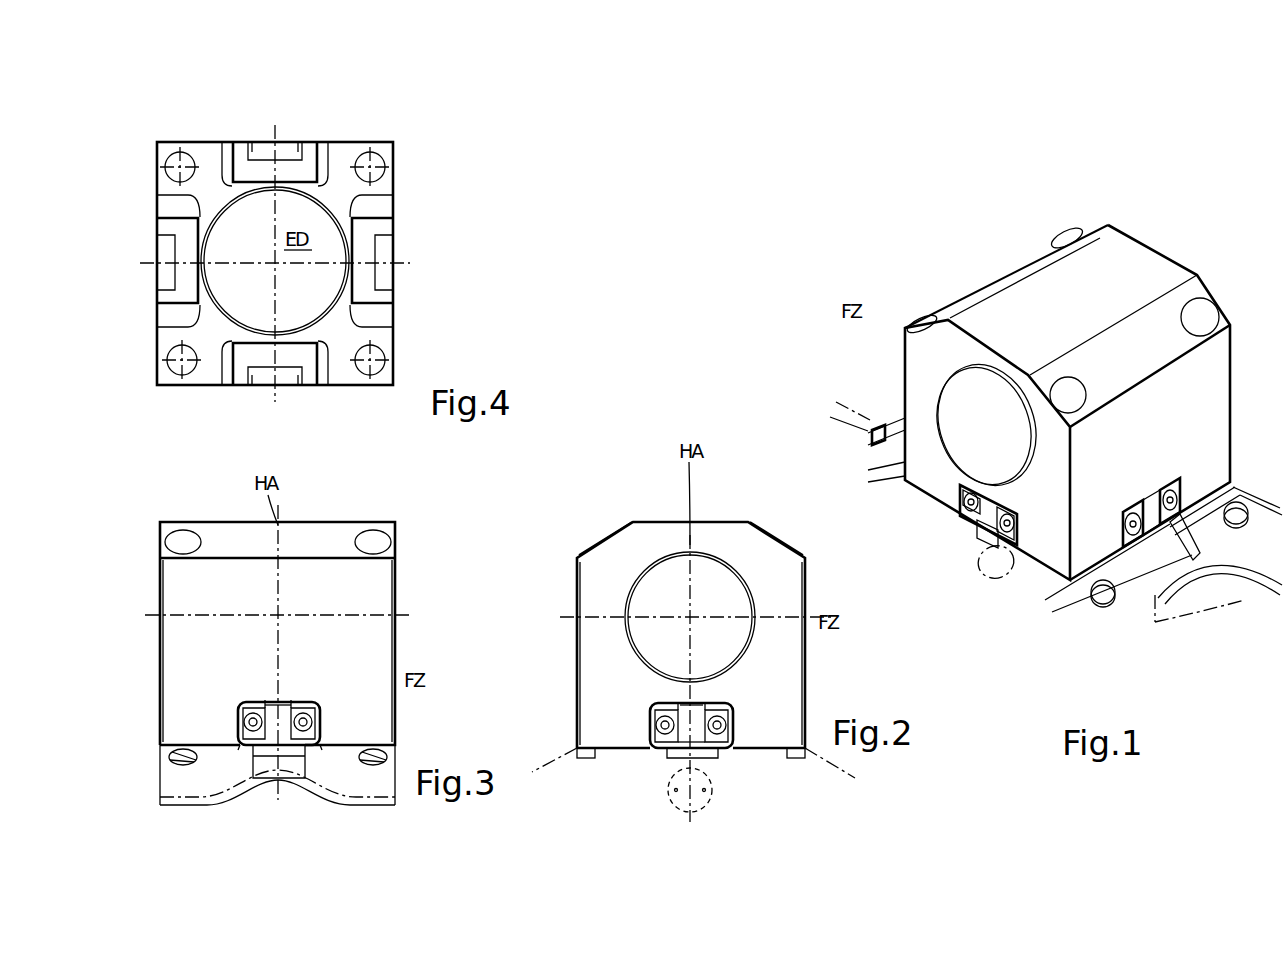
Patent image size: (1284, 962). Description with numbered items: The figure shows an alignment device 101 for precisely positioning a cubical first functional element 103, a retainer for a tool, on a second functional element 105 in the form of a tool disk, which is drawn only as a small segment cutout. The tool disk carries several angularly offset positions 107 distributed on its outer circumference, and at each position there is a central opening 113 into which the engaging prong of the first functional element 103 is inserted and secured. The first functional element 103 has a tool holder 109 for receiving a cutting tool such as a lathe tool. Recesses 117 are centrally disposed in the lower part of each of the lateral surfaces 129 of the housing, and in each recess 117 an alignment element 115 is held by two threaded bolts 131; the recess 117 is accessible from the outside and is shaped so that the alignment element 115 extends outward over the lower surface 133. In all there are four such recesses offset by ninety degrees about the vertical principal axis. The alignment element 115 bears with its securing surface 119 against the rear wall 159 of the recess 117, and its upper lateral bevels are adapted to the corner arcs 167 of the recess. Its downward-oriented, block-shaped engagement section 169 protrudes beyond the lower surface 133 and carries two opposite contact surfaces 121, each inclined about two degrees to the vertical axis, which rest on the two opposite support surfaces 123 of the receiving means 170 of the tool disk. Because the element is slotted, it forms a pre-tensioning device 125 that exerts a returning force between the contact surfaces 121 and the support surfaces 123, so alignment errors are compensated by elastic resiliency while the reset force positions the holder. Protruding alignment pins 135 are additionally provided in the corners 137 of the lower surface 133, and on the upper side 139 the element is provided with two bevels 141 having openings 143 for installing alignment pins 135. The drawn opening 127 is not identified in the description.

In FIG. 4, the alignment device 101 is at (418, 124).
In FIG. 3, the alignment device 101 is at (425, 520).
In FIG. 2, the alignment device 101 is at (772, 510).
In FIG. 1, the alignment device 101 is at (890, 275).
In FIG. 4, the first functional element 103 is at (350, 138).
In FIG. 3, the first functional element 103 is at (297, 520).
In FIG. 2, the first functional element 103 is at (713, 520).
In FIG. 1, the first functional element 103 is at (1160, 250).
In FIG. 1, the second functional element 105 is at (1087, 610).
In FIG. 1, the positions 107 is at (886, 483).
In FIG. 2, the tool holder 109 is at (728, 594).
In FIG. 1, the tool holder 109 is at (1007, 440).
In FIG. 1, the central opening 113 is at (1225, 592).
In FIG. 4, the alignment element 115 is at (262, 150).
In FIG. 3, the alignment element 115 is at (286, 712).
In FIG. 2, the alignment element 115 is at (705, 752).
In FIG. 1, the alignment element 115 is at (1180, 515).
In FIG. 4, the recess 117 is at (232, 175).
In FIG. 3, the recess 117 is at (312, 703).
In FIG. 2, the recess 117 is at (728, 712).
In FIG. 1, the recess 117 is at (1187, 503).
In FIG. 4, the securing surface 119 is at (328, 150).
In FIG. 4, the contact surface 121 is at (243, 145).
In FIG. 3, the contact surface 121 is at (245, 772).
In FIG. 2, the contact surface 121 is at (664, 754).
In FIG. 1, the contact surface 121 is at (1005, 560).
In FIG. 1, the support surface 123 is at (870, 410).
In FIG. 2, the pre-tensioning device 125 is at (683, 735).
In FIG. 2, the opening 127 is at (658, 588).
In FIG. 4, the lateral surfaces 129 is at (178, 140).
In FIG. 3, the lateral surfaces 129 is at (158, 622).
In FIG. 2, the lateral surfaces 129 is at (580, 618).
In FIG. 1, the lateral surfaces 129 is at (905, 372).
In FIG. 3, the threaded bolts 131 is at (245, 721).
In FIG. 2, the threaded bolts 131 is at (652, 722).
In FIG. 1, the threaded bolts 131 is at (965, 498).
In FIG. 4, the lower surface 133 is at (200, 368).
In FIG. 3, the lower surface 133 is at (218, 750).
In FIG. 2, the lower surface 133 is at (612, 752).
In FIG. 4, the alignment pins 135 is at (172, 160).
In FIG. 4, the corners 137 is at (155, 142).
In FIG. 3, the upper side 139 is at (228, 520).
In FIG. 2, the upper side 139 is at (640, 520).
In FIG. 1, the upper side 139 is at (1003, 310).
In FIG. 3, the bevels 141 is at (345, 520).
In FIG. 2, the bevels 141 is at (590, 552).
In FIG. 1, the bevels 141 is at (983, 285).
In FIG. 3, the openings 143 is at (180, 540).
In FIG. 1, the openings 143 is at (1068, 232).
In FIG. 4, the rear wall 159 is at (223, 193).
In FIG. 3, the rear wall 159 is at (244, 703).
In FIG. 2, the rear wall 159 is at (655, 704).
In FIG. 3, the corner arcs 167 is at (238, 710).
In FIG. 2, the corner arcs 167 is at (648, 708).
In FIG. 1, the corner arcs 167 is at (958, 488).
In FIG. 4, the engagement section 169 is at (283, 150).
In FIG. 3, the engagement section 169 is at (270, 750).
In FIG. 2, the engagement section 169 is at (700, 752).
In FIG. 1, the engagement section 169 is at (985, 533).
In FIG. 3, the receiving means 170 is at (390, 780).
In FIG. 1, the receiving means 170 is at (1240, 603).